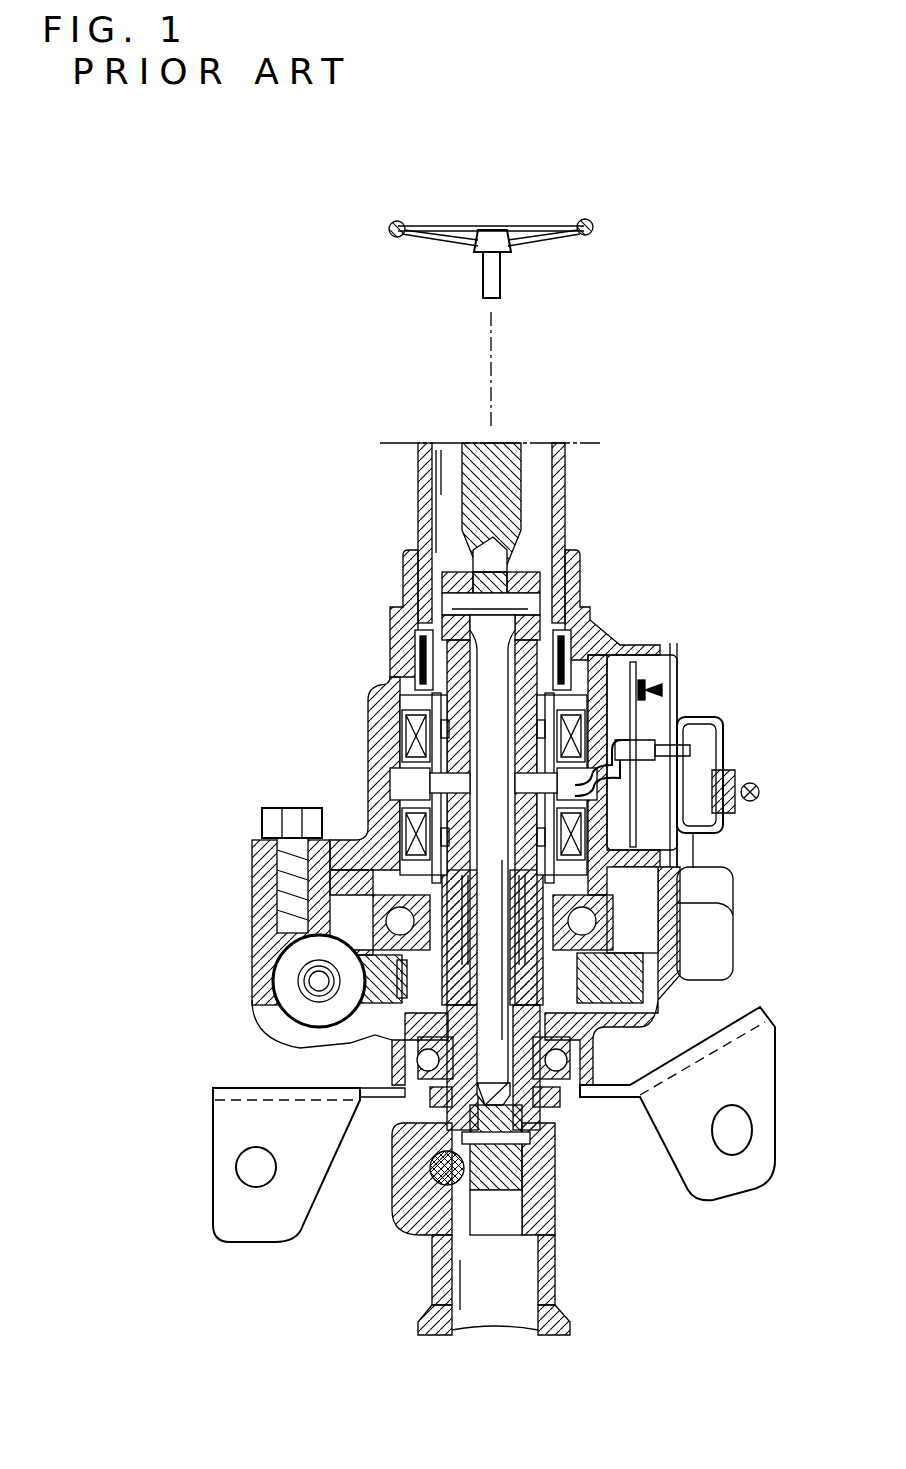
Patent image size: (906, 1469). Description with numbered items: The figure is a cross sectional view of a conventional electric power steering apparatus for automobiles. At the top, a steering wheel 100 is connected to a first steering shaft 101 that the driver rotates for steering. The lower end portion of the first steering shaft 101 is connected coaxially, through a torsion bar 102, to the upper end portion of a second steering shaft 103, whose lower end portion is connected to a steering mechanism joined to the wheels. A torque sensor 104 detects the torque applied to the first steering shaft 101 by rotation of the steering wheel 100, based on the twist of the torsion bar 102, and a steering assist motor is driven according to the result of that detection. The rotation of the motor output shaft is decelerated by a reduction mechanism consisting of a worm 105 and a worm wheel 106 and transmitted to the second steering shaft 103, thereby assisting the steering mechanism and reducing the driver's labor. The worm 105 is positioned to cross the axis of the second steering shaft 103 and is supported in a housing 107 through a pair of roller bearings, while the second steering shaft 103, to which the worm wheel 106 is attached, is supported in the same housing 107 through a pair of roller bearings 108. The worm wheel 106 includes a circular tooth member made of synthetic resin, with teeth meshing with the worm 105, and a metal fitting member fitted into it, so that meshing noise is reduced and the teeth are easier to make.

The steering wheel 100 is at (592, 226).
The first steering shaft 101 is at (508, 490).
The torsion bar 102 is at (505, 662).
The second steering shaft 103 is at (560, 1110).
The torque sensor 104 is at (650, 785).
The worm 105 is at (312, 978).
The worm wheel 106 is at (355, 1042).
The housing 107 is at (362, 766).
The roller bearings 108 is at (392, 921).